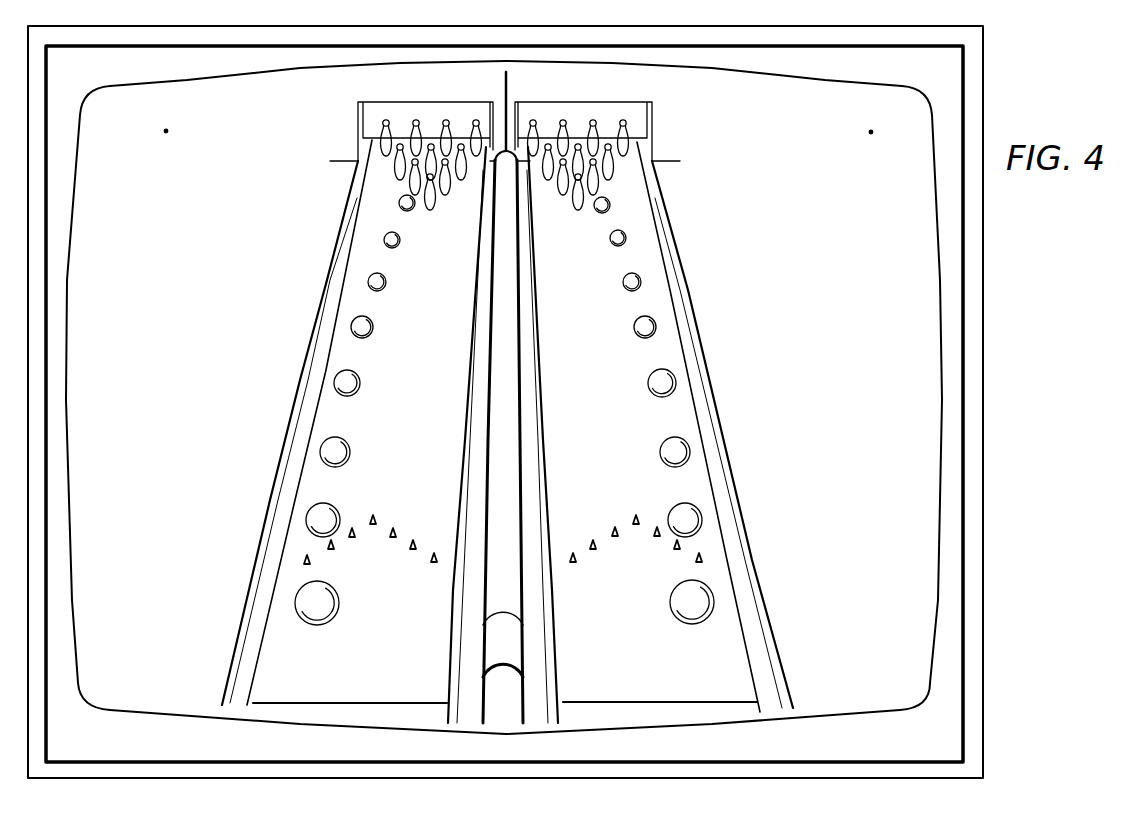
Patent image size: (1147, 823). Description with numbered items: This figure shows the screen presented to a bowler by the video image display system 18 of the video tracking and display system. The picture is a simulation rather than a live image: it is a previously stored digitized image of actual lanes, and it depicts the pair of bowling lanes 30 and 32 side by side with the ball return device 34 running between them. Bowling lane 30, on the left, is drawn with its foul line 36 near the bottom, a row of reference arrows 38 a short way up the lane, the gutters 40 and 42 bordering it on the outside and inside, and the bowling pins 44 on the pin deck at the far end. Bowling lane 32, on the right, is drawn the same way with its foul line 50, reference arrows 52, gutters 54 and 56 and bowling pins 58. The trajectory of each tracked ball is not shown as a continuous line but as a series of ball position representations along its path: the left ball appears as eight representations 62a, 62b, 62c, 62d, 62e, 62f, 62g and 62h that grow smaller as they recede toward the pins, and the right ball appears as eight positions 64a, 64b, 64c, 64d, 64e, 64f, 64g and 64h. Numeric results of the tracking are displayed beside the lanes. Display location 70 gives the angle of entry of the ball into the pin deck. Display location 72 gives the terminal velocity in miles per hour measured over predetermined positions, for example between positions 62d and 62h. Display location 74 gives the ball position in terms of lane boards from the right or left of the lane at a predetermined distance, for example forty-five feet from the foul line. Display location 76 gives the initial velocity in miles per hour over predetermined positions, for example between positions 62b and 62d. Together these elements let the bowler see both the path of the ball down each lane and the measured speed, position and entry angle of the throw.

The video image display system 18 is at (865, 475).
The bowling lane 30 is at (388, 671).
The bowling lane 32 is at (628, 672).
The ball return device 34 is at (518, 705).
The foul line 36 is at (306, 702).
The reference arrows 38 is at (395, 536).
The gutter 40 is at (306, 363).
The gutter 42 is at (469, 403).
The bowling pins 44 is at (474, 118).
The foul line 50 is at (692, 702).
The reference arrows 52 is at (659, 536).
The gutter 54 is at (540, 403).
The gutter 56 is at (703, 370).
The bowling pins 58 is at (622, 118).
The ball position representation 62a is at (339, 603).
The ball position representation 62b is at (335, 513).
The ball position representation 62c is at (350, 454).
The ball position representation 62d is at (360, 386).
The ball position representation 62e is at (373, 330).
The ball position representation 62f is at (385, 288).
The ball position representation 62g is at (399, 245).
The ball position representation 62h is at (411, 210).
The ball position representation 64a is at (670, 600).
The ball position representation 64b is at (673, 513).
The ball position representation 64c is at (660, 452).
The ball position representation 64d is at (648, 386).
The ball position representation 64e is at (634, 330).
The ball position representation 64f is at (624, 288).
The ball position representation 64g is at (611, 242).
The ball position representation 64h is at (597, 211).
The display location 70 is at (168, 141).
The display location 72 is at (170, 178).
The display location 74 is at (190, 207).
The display location 76 is at (183, 240).